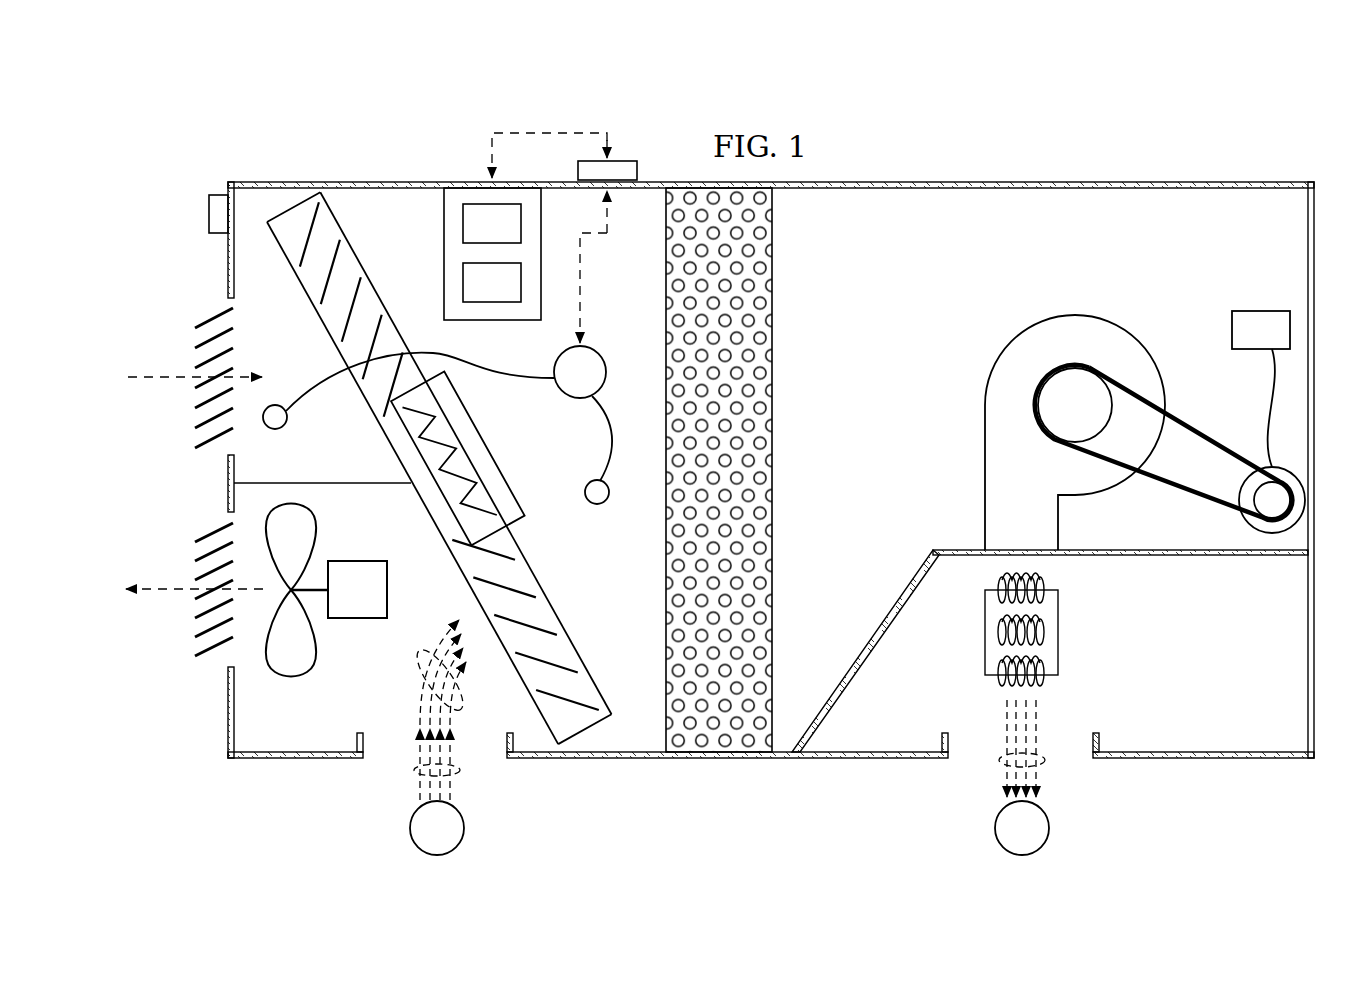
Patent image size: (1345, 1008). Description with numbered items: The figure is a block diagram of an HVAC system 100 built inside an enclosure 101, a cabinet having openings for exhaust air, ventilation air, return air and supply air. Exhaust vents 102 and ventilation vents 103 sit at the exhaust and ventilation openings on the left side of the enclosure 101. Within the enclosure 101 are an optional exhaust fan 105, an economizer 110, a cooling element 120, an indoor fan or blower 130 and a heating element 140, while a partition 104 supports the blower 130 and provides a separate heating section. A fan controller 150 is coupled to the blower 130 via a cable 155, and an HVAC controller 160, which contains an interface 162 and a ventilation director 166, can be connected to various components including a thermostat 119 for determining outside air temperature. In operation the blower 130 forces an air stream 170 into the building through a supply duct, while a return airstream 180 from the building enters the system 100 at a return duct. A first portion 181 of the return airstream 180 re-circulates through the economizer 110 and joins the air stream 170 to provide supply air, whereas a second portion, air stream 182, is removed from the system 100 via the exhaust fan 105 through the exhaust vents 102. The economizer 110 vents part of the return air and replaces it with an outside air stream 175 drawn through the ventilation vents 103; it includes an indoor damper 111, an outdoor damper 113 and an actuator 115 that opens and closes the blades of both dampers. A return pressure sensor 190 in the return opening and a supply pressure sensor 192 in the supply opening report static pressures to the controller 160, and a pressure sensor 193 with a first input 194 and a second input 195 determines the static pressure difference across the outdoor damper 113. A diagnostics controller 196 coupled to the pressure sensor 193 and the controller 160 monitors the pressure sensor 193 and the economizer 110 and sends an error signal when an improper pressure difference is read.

The HVAC system 100 is at (891, 146).
The enclosure 101 is at (986, 181).
The exhaust vents 102 is at (216, 661).
The ventilation vents 103 is at (211, 319).
The partition 104 is at (958, 549).
The exhaust fan 105 is at (291, 675).
The economizer 110 is at (441, 468).
The indoor damper 111 is at (578, 653).
The outdoor damper 113 is at (303, 291).
The actuator 115 is at (478, 446).
The thermostat 119 is at (209, 211).
The cooling element 120 is at (774, 241).
The blower 130 is at (1076, 316).
The heating element 140 is at (1059, 652).
The fan controller 150 is at (1262, 311).
The cable 155 is at (1269, 403).
The HVAC controller 160 is at (459, 254).
The interface 162 is at (492, 223).
The ventilation director 166 is at (492, 282).
The air stream 170 is at (1046, 762).
The air stream 175 is at (163, 376).
The return airstream 180 is at (414, 771).
The first portion 181 is at (421, 660).
The air stream 182 is at (156, 595).
The return pressure sensor 190 is at (410, 829).
The supply pressure sensor 192 is at (1049, 830).
The pressure sensor 193 is at (592, 348).
The first input 194 is at (279, 430).
The second input 195 is at (599, 505).
The diagnostics controller 196 is at (623, 161).